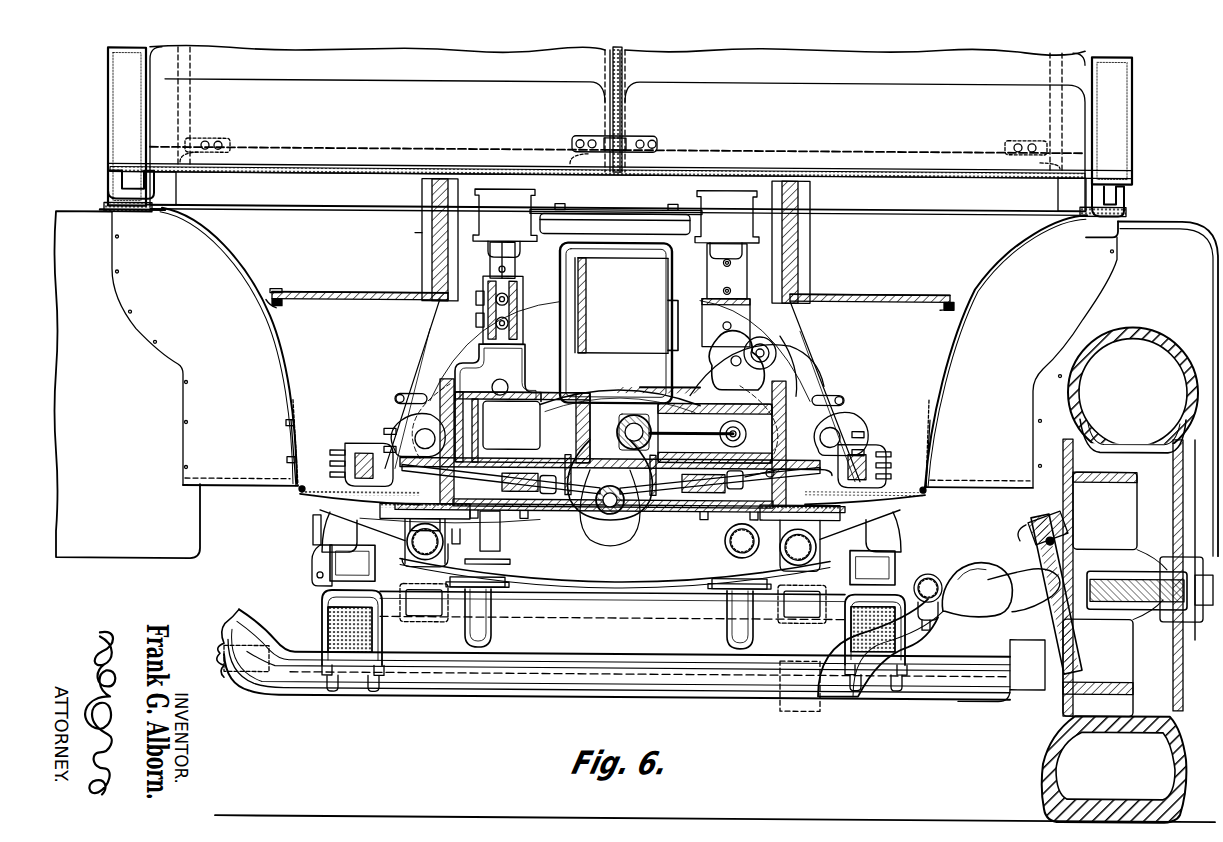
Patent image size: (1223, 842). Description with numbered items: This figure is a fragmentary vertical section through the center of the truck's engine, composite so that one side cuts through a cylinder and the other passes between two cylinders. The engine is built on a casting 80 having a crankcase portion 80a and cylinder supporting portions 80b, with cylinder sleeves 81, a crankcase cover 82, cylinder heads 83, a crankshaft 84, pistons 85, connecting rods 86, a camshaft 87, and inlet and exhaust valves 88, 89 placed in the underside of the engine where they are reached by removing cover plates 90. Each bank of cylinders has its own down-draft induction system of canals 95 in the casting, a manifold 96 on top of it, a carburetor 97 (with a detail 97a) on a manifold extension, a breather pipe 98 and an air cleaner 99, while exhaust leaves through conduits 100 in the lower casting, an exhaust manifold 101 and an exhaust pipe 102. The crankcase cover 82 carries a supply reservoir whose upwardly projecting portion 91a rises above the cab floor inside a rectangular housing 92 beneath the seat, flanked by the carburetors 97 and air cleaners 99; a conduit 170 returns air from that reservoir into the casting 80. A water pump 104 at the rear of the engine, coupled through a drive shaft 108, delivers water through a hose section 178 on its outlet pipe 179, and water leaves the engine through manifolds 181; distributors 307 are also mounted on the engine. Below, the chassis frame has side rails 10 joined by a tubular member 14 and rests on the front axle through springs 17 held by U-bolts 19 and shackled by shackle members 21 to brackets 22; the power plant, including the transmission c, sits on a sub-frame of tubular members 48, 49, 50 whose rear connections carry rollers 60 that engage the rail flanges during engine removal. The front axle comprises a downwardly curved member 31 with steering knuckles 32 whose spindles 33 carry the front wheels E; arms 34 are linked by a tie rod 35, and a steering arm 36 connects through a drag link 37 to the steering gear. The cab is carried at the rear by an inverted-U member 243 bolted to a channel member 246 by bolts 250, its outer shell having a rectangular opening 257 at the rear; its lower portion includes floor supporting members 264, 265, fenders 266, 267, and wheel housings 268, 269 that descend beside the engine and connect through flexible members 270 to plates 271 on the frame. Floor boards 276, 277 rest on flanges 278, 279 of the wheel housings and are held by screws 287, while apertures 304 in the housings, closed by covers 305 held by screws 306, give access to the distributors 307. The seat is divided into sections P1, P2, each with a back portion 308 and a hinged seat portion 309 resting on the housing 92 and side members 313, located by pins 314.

The back portion 308 is at (462, 50).
The seat portion 309 is at (350, 82).
The seat section P1 is at (569, 110).
The seat section P2 is at (654, 110).
The pins 314 is at (224, 148).
The rectangular housing 92 is at (702, 170).
The members 313 is at (176, 194).
The channel member 246 is at (360, 193).
The air cleaner 99 is at (533, 198).
The bolts 250 is at (650, 209).
The floor supporting member 265 is at (438, 303).
The floor supporting member 264 is at (778, 300).
The fender 267 is at (74, 223).
The wheel housing 269 is at (238, 272).
The floor board 277 is at (368, 293).
The screws 287 is at (279, 293).
The flange 279 is at (272, 310).
The screws 306 is at (286, 424).
The apertures 304 is at (296, 443).
The detachable covers 305 is at (288, 435).
The wheel housing 268 is at (1002, 259).
The fender 266 is at (1176, 219).
The floor board 276 is at (900, 294).
The flange 278 is at (946, 307).
The crankcase cover 82 is at (670, 286).
The conduit 170 is at (550, 340).
The upwardly projecting portion 91a is at (668, 318).
The breather pipe 98 is at (516, 265).
The carburetor 97 is at (518, 306).
The column lug 97a is at (480, 322).
The manifold 96 is at (476, 376).
The outlet pipe 179 is at (708, 300).
The hose section 178 is at (706, 320).
The drive shaft 108 is at (773, 360).
The pistons 85 is at (760, 368).
The water pump 104 is at (788, 352).
The crankcase portion 80a is at (570, 404).
The cylinder supporting portions 80b is at (538, 378).
The crankshaft 84 is at (636, 416).
The connecting rods 86 is at (666, 425).
The cylinder sleeves 81 is at (745, 434).
The canals 95 is at (483, 428).
The cylinder heads 83 is at (426, 430).
The manifolds 181 is at (394, 401).
The member 243 is at (394, 349).
The rectangular opening 257 is at (414, 374).
The distributors 307 is at (345, 481).
The inlet valves 88 is at (541, 492).
The exhaust valves 89 is at (686, 494).
The cover plates 90 is at (523, 496).
The camshaft 87 is at (598, 505).
The casting 80 is at (612, 514).
The conduits 100 is at (758, 490).
The exhaust manifold 101 is at (482, 558).
The tubular member 49 is at (408, 544).
The tubular member 50 is at (816, 543).
The tubular member 48 is at (558, 574).
The flexible members 270 is at (300, 492).
The plates 271 is at (310, 512).
The brackets 22 is at (312, 534).
The shackle members 21 is at (312, 565).
The side rails 10 is at (612, 565).
The U-bolts 19 is at (322, 597).
The springs 17 is at (326, 630).
The rollers 60 is at (613, 603).
The exhaust pipe 102 is at (492, 624).
The tubular member 14 is at (612, 608).
The transmission c is at (494, 702).
The tie rod 35 is at (817, 672).
The downwardly curved member 31 is at (956, 702).
The arms 34 is at (1042, 691).
The drag link 37 is at (938, 566).
The steering arm 36 is at (970, 582).
The steering knuckles 32 is at (1030, 538).
The front wheels E is at (1151, 326).
The spindles 33 is at (1146, 575).